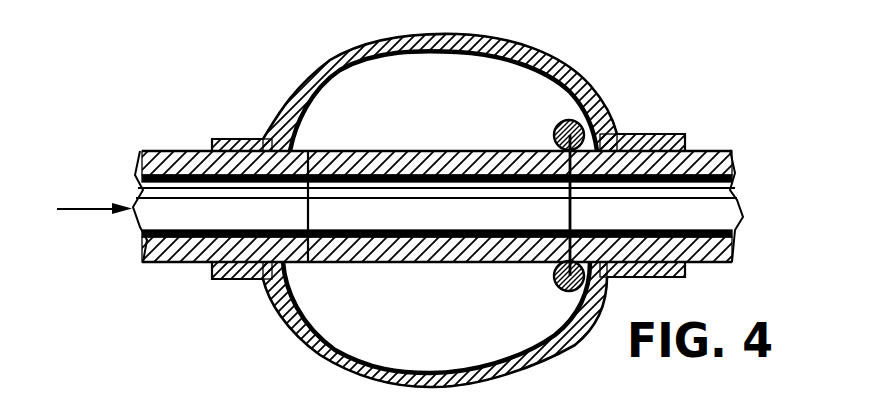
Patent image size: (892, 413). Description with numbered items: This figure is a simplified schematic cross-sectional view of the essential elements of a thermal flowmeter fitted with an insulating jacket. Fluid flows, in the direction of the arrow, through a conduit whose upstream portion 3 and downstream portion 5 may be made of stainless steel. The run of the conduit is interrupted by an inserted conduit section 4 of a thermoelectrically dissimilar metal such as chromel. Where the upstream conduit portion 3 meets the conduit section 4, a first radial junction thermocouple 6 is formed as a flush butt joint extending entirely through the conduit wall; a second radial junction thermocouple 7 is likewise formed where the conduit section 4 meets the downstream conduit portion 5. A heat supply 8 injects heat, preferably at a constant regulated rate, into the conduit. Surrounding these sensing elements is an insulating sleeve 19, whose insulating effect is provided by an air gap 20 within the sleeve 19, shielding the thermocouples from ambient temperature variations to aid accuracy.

The upstream conduit portion 3 is at (192, 151).
The conduit section 4 is at (473, 151).
The downstream conduit portion 5 is at (704, 151).
The first radial junction thermocouple 6 is at (308, 151).
The second radial junction thermocouple 7 is at (548, 151).
The heat supply 8 is at (556, 290).
The insulating sleeve 19 is at (505, 40).
The air gap 20 is at (378, 92).